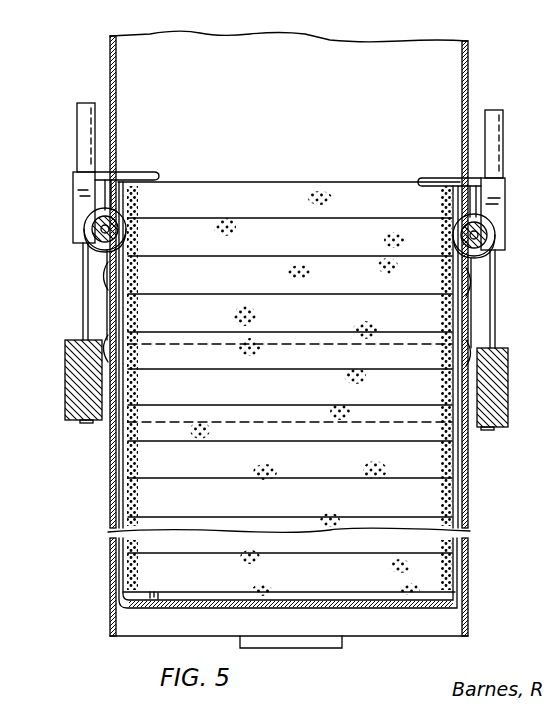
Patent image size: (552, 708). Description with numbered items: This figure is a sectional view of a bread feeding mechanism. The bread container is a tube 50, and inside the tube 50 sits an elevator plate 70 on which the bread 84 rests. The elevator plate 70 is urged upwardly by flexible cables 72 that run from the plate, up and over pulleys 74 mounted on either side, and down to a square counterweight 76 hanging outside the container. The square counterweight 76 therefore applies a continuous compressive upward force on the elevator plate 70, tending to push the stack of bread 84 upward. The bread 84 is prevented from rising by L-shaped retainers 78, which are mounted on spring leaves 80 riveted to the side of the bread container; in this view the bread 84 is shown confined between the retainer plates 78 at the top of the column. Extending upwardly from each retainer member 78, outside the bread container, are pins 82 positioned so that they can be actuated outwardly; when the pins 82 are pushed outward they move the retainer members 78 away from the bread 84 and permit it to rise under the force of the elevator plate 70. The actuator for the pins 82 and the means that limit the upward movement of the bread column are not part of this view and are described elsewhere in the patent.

The tube 50 is at (466, 510).
The elevator plate 70 is at (400, 608).
The flexible cables 72 is at (140, 179).
The pulleys 74 is at (95, 245).
The square counterweight 76 is at (66, 420).
The L-shaped retainers 78 is at (440, 182).
The spring leaves 80 is at (110, 311).
The pins 82 is at (81, 125).
The bread 84 is at (265, 187).